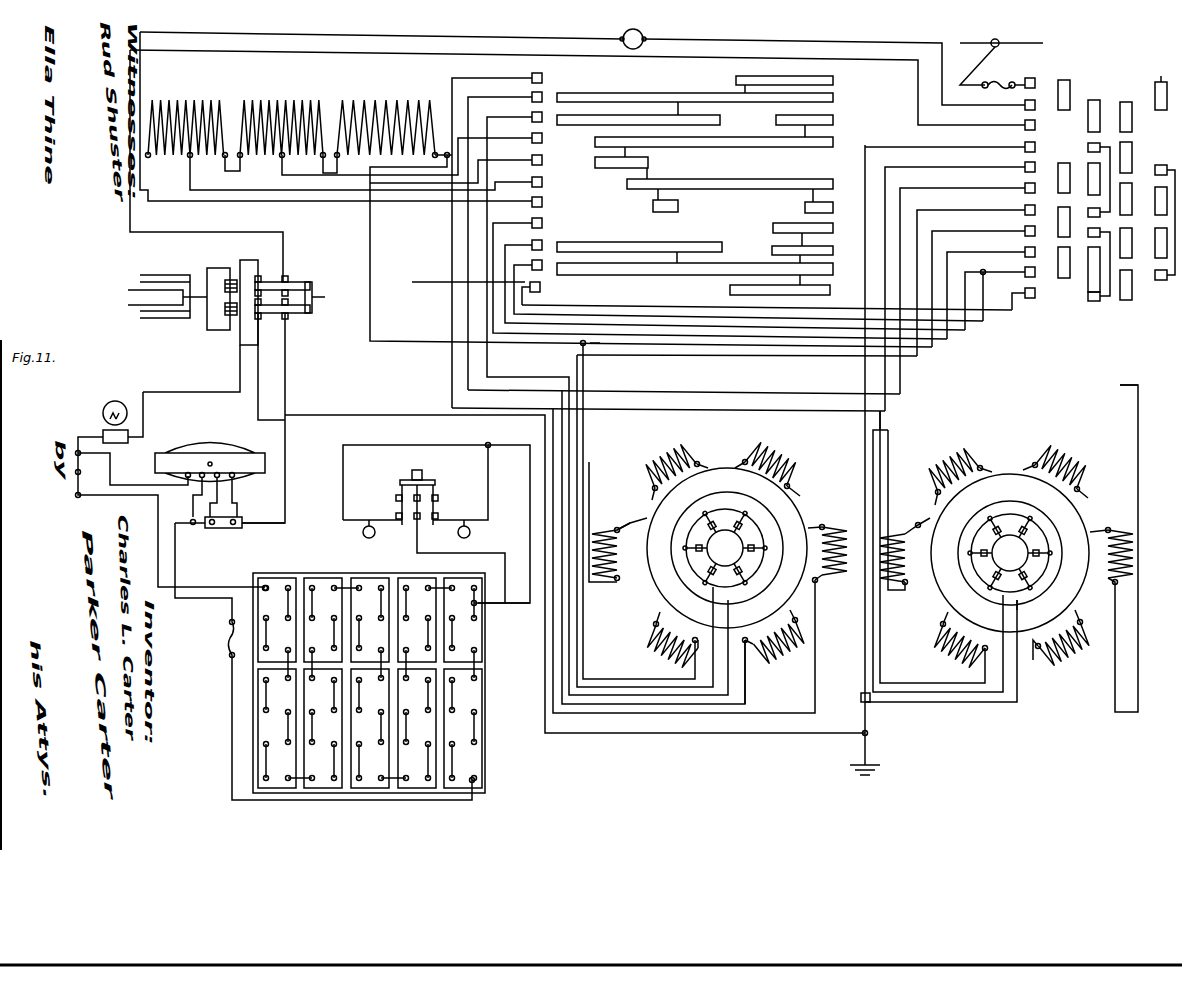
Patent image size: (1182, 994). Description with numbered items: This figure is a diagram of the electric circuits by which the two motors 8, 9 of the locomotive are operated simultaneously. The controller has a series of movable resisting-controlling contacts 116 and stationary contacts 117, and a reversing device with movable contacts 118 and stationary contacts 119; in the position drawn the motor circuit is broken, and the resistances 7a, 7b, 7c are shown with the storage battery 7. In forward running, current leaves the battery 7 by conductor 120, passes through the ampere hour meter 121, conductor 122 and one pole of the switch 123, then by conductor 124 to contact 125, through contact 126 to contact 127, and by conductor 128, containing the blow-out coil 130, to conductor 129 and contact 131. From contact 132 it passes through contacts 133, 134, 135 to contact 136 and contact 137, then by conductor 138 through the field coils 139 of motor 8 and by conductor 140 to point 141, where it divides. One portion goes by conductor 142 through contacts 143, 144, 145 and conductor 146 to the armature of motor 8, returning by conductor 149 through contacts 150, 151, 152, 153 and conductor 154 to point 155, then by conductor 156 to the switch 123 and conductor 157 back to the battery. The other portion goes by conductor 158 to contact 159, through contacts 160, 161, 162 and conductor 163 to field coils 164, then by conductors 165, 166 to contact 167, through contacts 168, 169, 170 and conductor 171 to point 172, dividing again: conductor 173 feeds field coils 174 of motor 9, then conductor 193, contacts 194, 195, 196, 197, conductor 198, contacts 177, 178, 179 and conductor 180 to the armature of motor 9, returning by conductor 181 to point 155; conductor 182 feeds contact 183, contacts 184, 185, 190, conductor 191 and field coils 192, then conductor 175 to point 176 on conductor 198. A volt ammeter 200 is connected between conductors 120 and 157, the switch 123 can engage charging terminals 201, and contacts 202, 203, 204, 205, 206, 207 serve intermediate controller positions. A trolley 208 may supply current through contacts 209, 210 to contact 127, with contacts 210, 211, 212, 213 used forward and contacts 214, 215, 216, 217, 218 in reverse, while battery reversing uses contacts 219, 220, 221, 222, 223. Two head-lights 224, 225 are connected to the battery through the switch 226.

The storage battery 7 is at (268, 722).
The resistance 7a is at (177, 103).
The resistance 7b is at (266, 104).
The resistance 7c is at (362, 104).
The motor 8 is at (726, 443).
The motor 9 is at (1042, 431).
The movable contacts 116 is at (720, 77).
The stationary contacts 117 is at (545, 68).
The movable contacts 118 is at (1132, 55).
The stationary contacts 119 is at (1028, 78).
The conductor 120 is at (224, 588).
The ampere hour meter 121 is at (104, 410).
The conductor 122 is at (201, 399).
The switch 123 is at (292, 280).
The conductor 124 is at (452, 60).
The contact 125 is at (1024, 127).
The contact 126 is at (1088, 120).
The contact 127 is at (1024, 107).
The conductor 128 is at (888, 48).
The conductor 129 is at (331, 206).
The blow-out coil 130 is at (643, 35).
The contact 131 is at (532, 198).
The contact 132 is at (826, 210).
The contact 133 is at (810, 184).
The contact 134 is at (648, 162).
The contact 135 is at (762, 140).
The contact 136 is at (833, 120).
The contact 137 is at (530, 114).
The conductor 138 is at (485, 248).
The field coils 139 is at (662, 454).
The conductor 140 is at (765, 708).
The point 141 is at (556, 408).
The conductor 142 is at (650, 408).
The contact 143 is at (1024, 187).
The contact 144 is at (1086, 172).
The contact 145 is at (1026, 166).
The conductor 146 is at (958, 173).
The conductor 149 is at (918, 211).
The contact 150 is at (1024, 209).
The contact 151 is at (1096, 212).
The contact 152 is at (1096, 144).
The contact 153 is at (1026, 146).
The conductor 154 is at (914, 149).
The point 155 is at (860, 693).
The conductor 156 is at (308, 413).
The conductor 157 is at (260, 431).
The conductor 158 is at (452, 386).
The contact 159 is at (530, 76).
The contact 160 is at (833, 80).
The contact 161 is at (833, 98).
The contact 162 is at (530, 89).
The conductor 163 is at (480, 98).
The field coils 164 is at (792, 459).
The conductor 165 is at (589, 486).
The conductor 166 is at (658, 352).
The contact 167 is at (1024, 291).
The contact 168 is at (1096, 303).
The contact 169 is at (1088, 236).
The contact 170 is at (1024, 230).
The conductor 171 is at (964, 234).
The point 172 is at (908, 350).
The conductor 173 is at (886, 486).
The field coils 174 is at (1069, 454).
The conductor 175 is at (1120, 387).
The point 176 is at (981, 268).
The contact 177 is at (1024, 271).
The contact 178 is at (1090, 280).
The contact 179 is at (1024, 251).
The conductor 180 is at (980, 254).
The conductor 181 is at (1020, 632).
The conductor 182 is at (730, 342).
The contact 183 is at (530, 221).
The contact 184 is at (794, 227).
The contact 185 is at (774, 248).
The contact 190 is at (530, 243).
The conductor 191 is at (894, 448).
The field coils 192 is at (959, 450).
The conductor 193 is at (676, 310).
The contact 194 is at (530, 263).
The contact 195 is at (738, 262).
The contact 196 is at (730, 290).
The contact 197 is at (540, 287).
The conductor 198 is at (628, 306).
The volt ammeter 200 is at (227, 448).
The terminals 201 is at (220, 292).
The contact 202 is at (720, 120).
The contact 203 is at (678, 206).
The contact 204 is at (636, 242).
The contact 205 is at (532, 137).
The contact 206 is at (532, 159).
The contact 207 is at (532, 181).
The trolley 208 is at (1000, 40).
The contact 209 is at (1022, 82).
The contact 210 is at (1064, 80).
The contact 211 is at (1058, 188).
The contact 212 is at (1058, 222).
The contact 213 is at (1058, 264).
The contact 214 is at (1126, 100).
The contact 215 is at (1126, 148).
The contact 216 is at (1126, 190).
The contact 217 is at (1128, 232).
The contact 218 is at (1124, 298).
The contact 219 is at (1152, 80).
The contact 220 is at (1158, 166).
The contact 221 is at (1154, 206).
The contact 222 is at (1154, 248).
The contact 223 is at (1158, 283).
The head-light 224 is at (362, 533).
The head-light 225 is at (470, 533).
The switch 226 is at (430, 482).